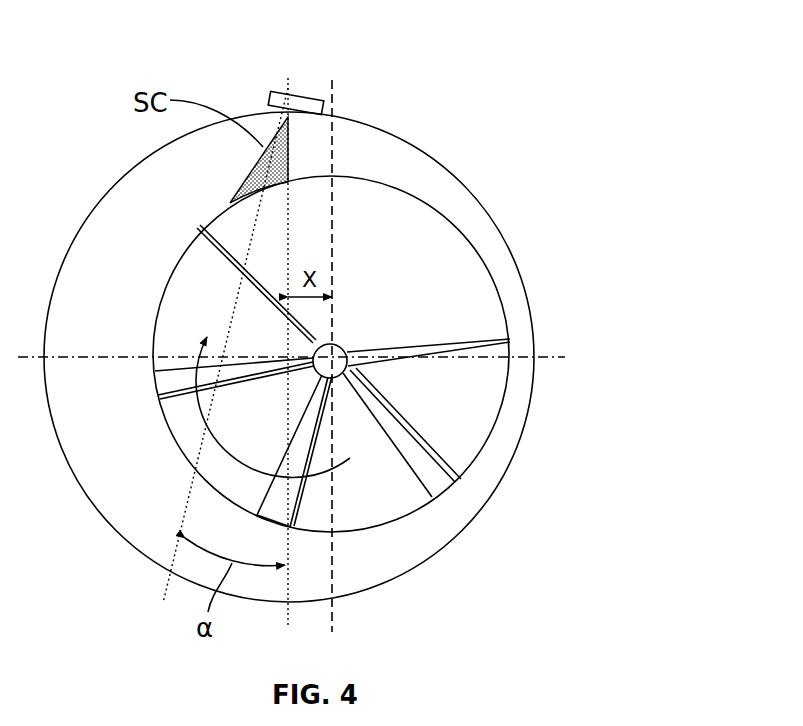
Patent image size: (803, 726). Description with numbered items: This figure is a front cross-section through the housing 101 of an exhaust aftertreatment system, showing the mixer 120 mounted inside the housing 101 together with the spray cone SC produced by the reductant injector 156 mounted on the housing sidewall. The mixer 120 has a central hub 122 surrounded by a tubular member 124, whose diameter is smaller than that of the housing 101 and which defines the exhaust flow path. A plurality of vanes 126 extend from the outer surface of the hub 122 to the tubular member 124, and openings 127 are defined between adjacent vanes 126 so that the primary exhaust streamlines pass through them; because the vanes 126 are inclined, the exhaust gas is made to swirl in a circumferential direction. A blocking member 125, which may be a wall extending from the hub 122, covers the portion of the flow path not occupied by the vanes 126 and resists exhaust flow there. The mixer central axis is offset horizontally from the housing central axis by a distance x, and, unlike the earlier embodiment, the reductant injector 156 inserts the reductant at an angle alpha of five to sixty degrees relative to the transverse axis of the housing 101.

The housing 101 is at (432, 553).
The mixer 120 is at (486, 240).
The hub 122 is at (122, 490).
The tubular member 124 is at (410, 343).
The blocking member 125 is at (477, 202).
The vanes 126 is at (384, 479).
The openings 127 is at (452, 476).
The reductant injector 156 is at (293, 88).